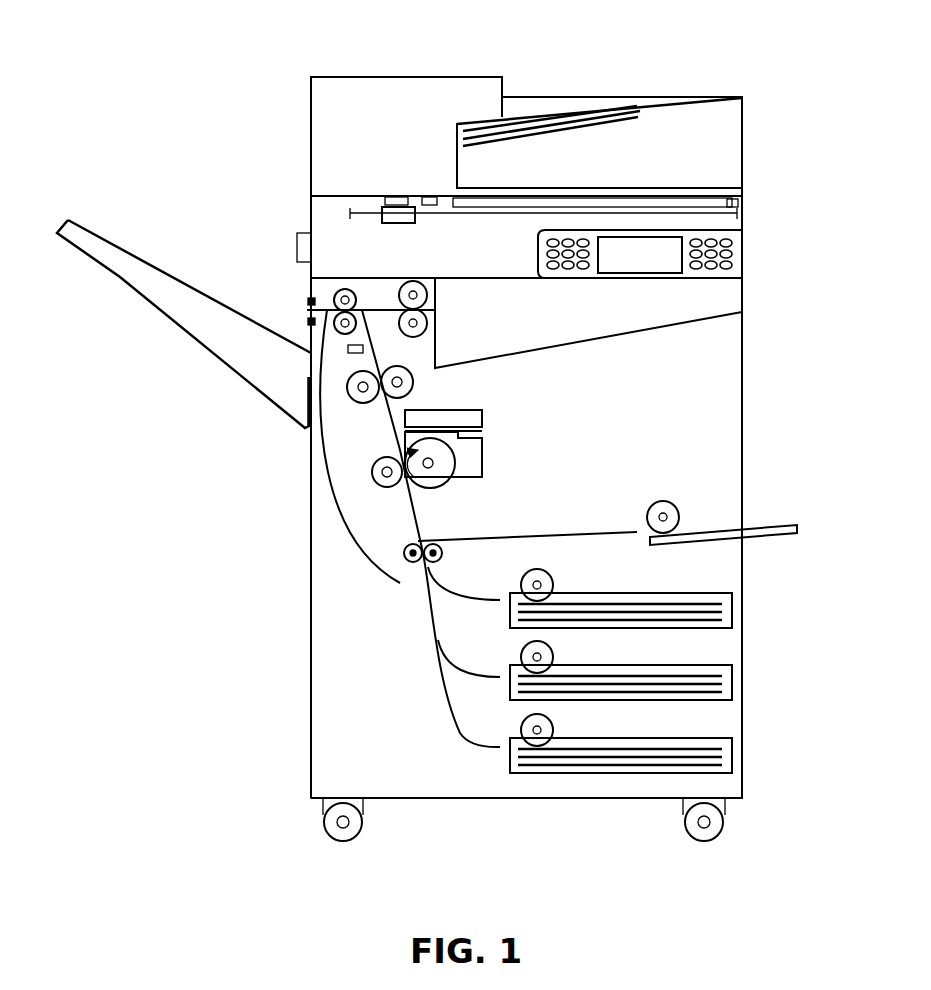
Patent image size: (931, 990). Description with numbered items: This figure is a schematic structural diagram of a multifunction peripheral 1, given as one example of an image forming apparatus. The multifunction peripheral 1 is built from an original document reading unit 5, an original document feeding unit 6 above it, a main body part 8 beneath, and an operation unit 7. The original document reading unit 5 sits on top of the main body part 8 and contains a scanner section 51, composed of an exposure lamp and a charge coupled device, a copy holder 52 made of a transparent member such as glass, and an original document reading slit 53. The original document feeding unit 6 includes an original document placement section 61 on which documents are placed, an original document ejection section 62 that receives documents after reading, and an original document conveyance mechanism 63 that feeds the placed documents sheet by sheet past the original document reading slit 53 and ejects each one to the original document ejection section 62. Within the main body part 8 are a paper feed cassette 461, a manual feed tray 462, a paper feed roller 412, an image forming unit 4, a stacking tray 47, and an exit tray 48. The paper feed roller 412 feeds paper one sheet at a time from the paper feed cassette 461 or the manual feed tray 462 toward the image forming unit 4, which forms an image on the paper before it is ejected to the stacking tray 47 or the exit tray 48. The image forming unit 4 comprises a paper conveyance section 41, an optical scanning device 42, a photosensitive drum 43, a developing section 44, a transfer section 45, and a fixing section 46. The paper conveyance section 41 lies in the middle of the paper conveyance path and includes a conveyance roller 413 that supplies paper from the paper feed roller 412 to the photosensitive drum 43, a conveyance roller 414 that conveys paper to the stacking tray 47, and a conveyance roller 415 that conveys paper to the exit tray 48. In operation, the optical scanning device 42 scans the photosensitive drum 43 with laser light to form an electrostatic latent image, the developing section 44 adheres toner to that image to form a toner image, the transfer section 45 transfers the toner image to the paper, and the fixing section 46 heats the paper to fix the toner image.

The multifunction peripheral 1 is at (134, 72).
The image forming unit 4 is at (357, 458).
The original document reading unit 5 is at (328, 222).
The original document feeding unit 6 is at (557, 99).
The operation unit 7 is at (538, 255).
The main body part 8 is at (717, 449).
The paper conveyance section 41 is at (413, 662).
The optical scanning device 42 is at (483, 418).
The photosensitive drum 43 is at (440, 481).
The developing section 44 is at (476, 453).
The transfer section 45 is at (377, 487).
The fixing section 46 is at (369, 416).
The stacking tray 47 is at (197, 350).
The exit tray 48 is at (583, 342).
The scanner section 51 is at (395, 224).
The copy holder 52 is at (733, 203).
The original document reading slit 53 is at (393, 198).
The original document placement section 61 is at (660, 103).
The original document ejection section 62 is at (677, 188).
The original document conveyance mechanism 63 is at (387, 149).
The paper feed roller 412 is at (674, 505).
The conveyance roller 413 is at (411, 563).
The conveyance roller 414 is at (330, 293).
The conveyance roller 415 is at (428, 296).
The paper feed cassette 461 is at (728, 615).
The manual feed tray 462 is at (767, 538).